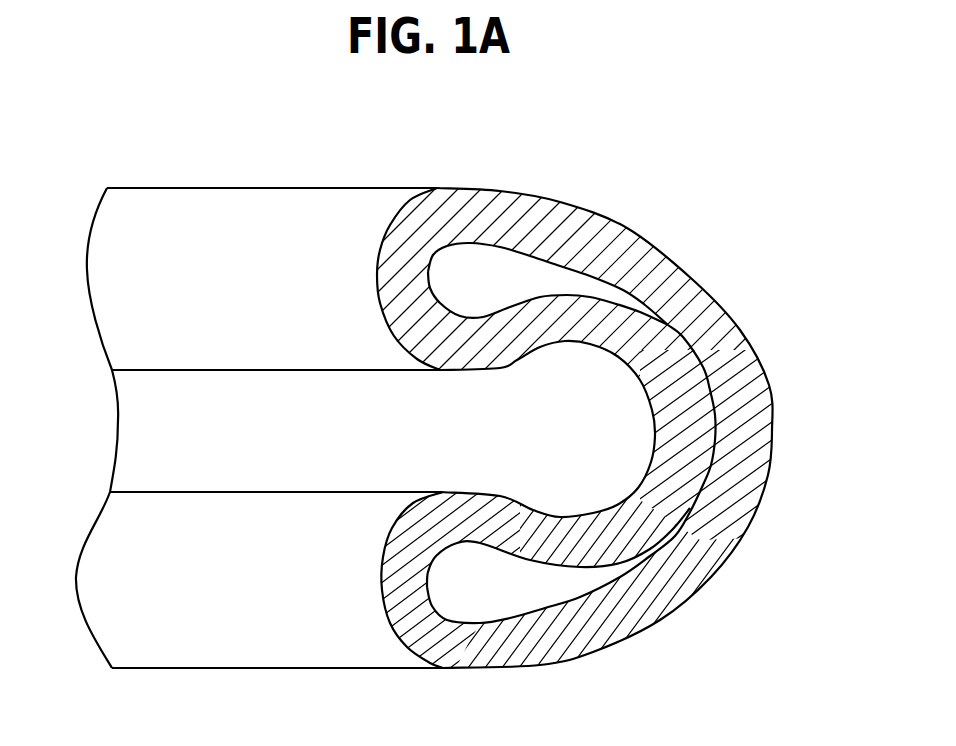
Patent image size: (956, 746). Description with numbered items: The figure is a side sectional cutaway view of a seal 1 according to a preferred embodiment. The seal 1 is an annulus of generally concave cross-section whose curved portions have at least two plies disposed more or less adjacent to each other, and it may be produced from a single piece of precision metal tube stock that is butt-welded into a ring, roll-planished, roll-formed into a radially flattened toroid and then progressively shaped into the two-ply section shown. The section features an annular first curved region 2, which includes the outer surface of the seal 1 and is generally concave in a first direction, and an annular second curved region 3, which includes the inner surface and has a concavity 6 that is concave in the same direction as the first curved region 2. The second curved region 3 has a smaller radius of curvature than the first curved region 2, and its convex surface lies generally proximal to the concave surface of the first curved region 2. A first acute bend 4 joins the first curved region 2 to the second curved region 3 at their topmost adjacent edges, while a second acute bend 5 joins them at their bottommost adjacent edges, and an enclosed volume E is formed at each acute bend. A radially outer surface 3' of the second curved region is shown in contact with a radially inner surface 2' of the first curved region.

The seal 1 is at (720, 242).
The first curved region 2 is at (668, 428).
The radially inner surface of the first curved region 2' is at (548, 225).
The second curved region 3 is at (571, 474).
The radially outer surface of the second curved region 3' is at (548, 234).
The first acute bend 4 is at (373, 287).
The second acute bend 5 is at (379, 555).
The concavity 6 is at (578, 407).
The enclosed volume E is at (423, 669).